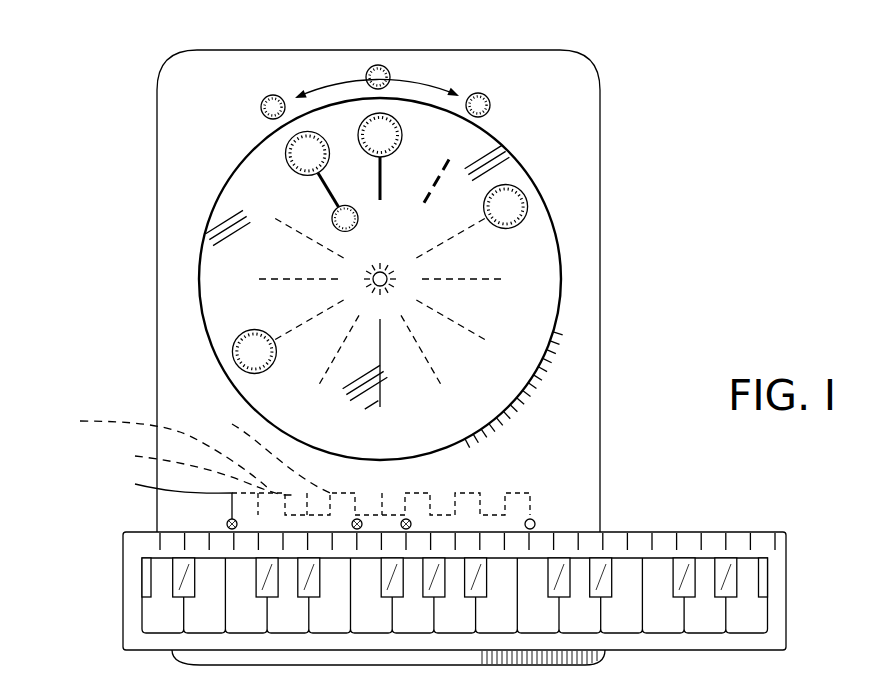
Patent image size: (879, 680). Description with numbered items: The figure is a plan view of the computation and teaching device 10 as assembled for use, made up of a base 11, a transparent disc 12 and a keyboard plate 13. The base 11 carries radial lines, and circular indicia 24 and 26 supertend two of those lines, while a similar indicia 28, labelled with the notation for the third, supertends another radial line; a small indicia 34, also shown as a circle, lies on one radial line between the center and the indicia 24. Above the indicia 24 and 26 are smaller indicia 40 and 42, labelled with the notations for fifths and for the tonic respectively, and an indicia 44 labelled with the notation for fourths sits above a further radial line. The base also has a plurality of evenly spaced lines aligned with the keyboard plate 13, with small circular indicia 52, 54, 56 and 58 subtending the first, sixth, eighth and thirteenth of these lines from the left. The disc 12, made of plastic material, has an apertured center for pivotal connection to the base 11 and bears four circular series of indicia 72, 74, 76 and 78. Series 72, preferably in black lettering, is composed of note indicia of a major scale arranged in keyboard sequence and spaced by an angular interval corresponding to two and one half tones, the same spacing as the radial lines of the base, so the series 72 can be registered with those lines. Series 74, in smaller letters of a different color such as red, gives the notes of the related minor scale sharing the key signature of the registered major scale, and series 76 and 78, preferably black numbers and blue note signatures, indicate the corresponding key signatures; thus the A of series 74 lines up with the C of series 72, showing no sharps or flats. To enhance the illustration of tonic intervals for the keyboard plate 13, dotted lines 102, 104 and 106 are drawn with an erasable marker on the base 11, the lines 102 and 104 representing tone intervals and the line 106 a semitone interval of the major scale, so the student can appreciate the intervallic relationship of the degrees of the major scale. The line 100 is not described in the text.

The computation and teaching device 10 is at (134, 376).
The base 11 is at (582, 197).
The transparent disc 12 is at (404, 230).
The keyboard plate 13 is at (709, 531).
The indicia 24 is at (286, 153).
The indicia 26 is at (440, 88).
The indicia 28 is at (230, 343).
The small indicia 34 is at (333, 214).
The indicia 40 is at (271, 95).
The indicia 42 is at (380, 65).
The indicia 44 is at (490, 99).
The indicia 52 is at (226, 524).
The indicia 54 is at (359, 519).
The indicia 56 is at (410, 520).
The indicia 58 is at (536, 523).
The series of indicia 72 is at (396, 118).
The indicia series 74 is at (306, 247).
The series of indicia 76 is at (426, 263).
The series of indicia 78 is at (442, 272).
The conductor 100 is at (158, 489).
The line 102 is at (187, 462).
The line 104 is at (147, 444).
The line 106 is at (256, 445).